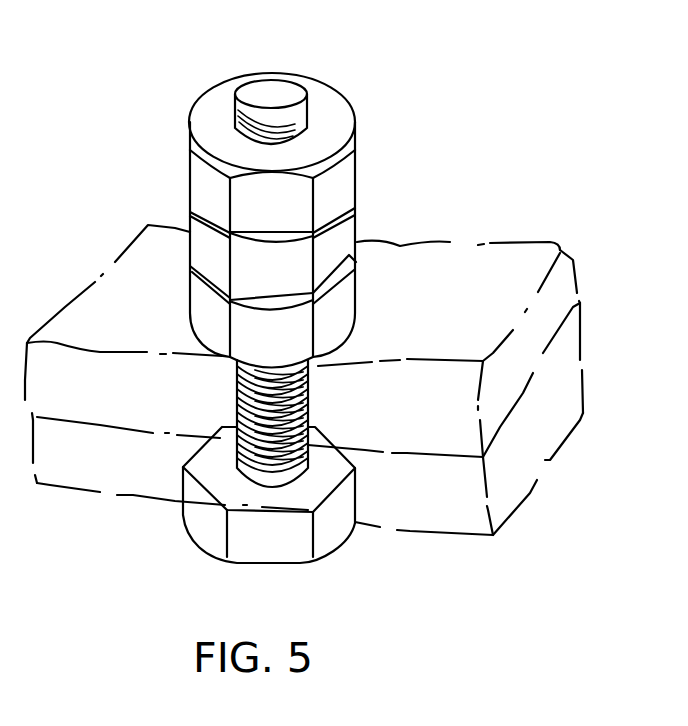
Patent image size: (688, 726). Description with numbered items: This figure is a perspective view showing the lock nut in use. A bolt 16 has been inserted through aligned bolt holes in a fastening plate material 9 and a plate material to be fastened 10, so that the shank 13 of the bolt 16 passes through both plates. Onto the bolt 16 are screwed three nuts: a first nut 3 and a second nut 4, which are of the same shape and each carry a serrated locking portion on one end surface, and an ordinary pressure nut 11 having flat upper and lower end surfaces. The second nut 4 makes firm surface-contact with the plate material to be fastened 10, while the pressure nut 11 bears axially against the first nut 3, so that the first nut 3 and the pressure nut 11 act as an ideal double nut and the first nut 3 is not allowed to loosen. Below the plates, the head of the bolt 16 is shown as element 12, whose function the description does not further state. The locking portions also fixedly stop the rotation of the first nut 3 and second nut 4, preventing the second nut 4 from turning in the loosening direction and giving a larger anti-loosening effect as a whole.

The first nut 3 is at (356, 219).
The second nut 4 is at (350, 287).
The fastening plate material 9 is at (547, 427).
The plate material to be fastened 10 is at (513, 267).
The pressure nut 11 is at (325, 108).
The lower nut 12 is at (305, 526).
The shank 13 is at (237, 458).
The bolt 16 is at (292, 568).